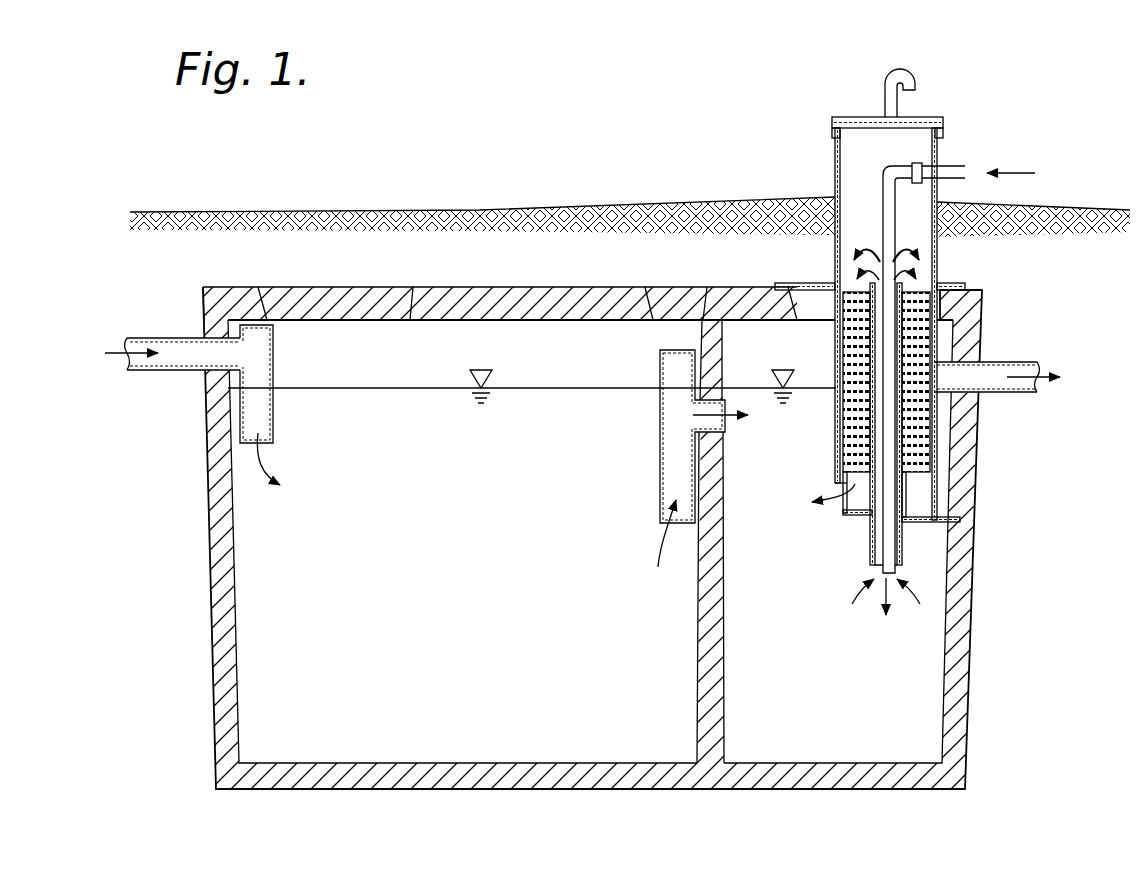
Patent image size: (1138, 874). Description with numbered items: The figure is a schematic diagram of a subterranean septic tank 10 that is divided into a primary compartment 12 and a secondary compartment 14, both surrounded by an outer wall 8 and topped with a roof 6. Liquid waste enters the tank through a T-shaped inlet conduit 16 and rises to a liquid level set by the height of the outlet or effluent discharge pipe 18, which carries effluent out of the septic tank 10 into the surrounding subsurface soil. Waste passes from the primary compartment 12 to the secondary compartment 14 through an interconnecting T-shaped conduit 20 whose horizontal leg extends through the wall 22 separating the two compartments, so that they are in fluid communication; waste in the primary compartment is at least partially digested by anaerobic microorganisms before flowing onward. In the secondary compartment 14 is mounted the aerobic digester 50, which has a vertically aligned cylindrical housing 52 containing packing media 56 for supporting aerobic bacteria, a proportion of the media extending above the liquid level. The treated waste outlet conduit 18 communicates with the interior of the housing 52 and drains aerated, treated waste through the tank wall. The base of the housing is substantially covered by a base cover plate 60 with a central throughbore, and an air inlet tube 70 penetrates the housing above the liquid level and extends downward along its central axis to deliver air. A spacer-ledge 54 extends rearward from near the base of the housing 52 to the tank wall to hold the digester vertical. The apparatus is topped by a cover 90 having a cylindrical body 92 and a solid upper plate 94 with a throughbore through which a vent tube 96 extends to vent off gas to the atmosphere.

The roof 6 is at (577, 289).
The outer wall 8 is at (208, 603).
The septic tank 10 is at (283, 270).
The primary compartment 12 is at (484, 563).
The secondary compartment 14 is at (811, 563).
The inlet conduit 16 is at (160, 338).
The outlet or effluent discharge pipe 18 is at (1000, 360).
The interconnecting T-shaped conduit 20 is at (660, 445).
The wall 22 is at (723, 688).
The aerobic digester 50 is at (847, 324).
The cylindrical housing 52 is at (937, 257).
The spacer-ledge 54 is at (937, 522).
The packing media 56 is at (935, 432).
The base cover plate 60 is at (908, 523).
The air inlet tube 70 is at (960, 166).
The cover 90 is at (877, 278).
The cylindrical body 92 is at (937, 140).
The solid upper plate 94 is at (918, 118).
The vent tube 96 is at (913, 74).